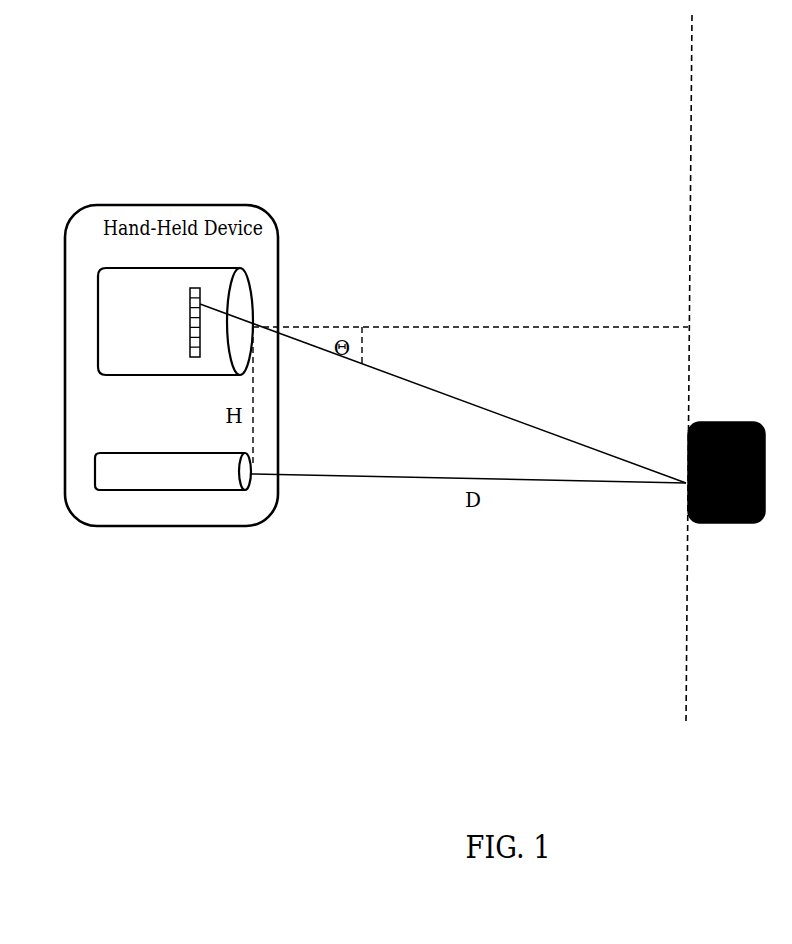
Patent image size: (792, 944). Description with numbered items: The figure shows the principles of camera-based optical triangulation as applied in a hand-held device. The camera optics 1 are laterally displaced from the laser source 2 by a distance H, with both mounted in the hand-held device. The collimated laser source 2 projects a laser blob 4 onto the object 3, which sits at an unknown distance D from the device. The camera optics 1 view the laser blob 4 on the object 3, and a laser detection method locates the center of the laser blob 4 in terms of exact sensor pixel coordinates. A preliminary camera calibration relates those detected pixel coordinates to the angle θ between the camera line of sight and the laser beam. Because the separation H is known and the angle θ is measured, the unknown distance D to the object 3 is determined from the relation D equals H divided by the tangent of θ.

The camera optics 1 is at (263, 304).
The laser source 2 is at (258, 488).
The object 3 is at (676, 509).
The laser blob 4 is at (681, 466).